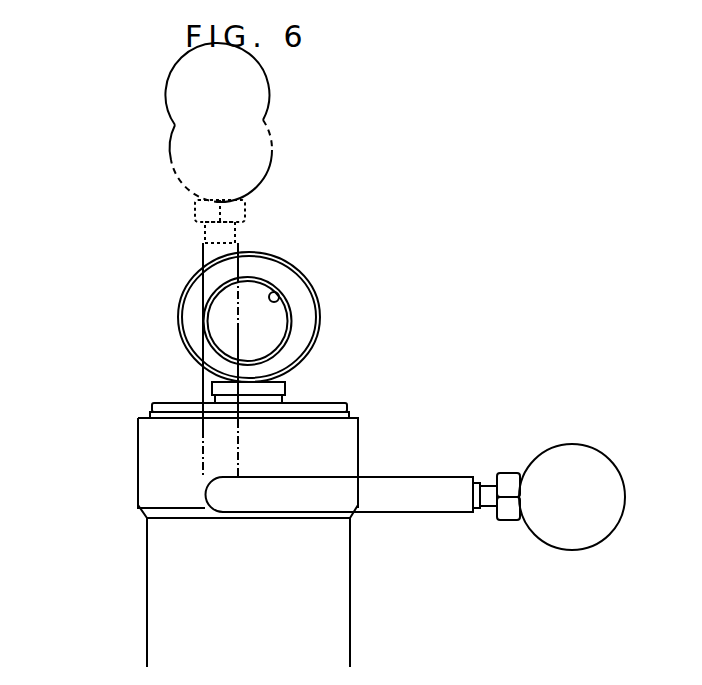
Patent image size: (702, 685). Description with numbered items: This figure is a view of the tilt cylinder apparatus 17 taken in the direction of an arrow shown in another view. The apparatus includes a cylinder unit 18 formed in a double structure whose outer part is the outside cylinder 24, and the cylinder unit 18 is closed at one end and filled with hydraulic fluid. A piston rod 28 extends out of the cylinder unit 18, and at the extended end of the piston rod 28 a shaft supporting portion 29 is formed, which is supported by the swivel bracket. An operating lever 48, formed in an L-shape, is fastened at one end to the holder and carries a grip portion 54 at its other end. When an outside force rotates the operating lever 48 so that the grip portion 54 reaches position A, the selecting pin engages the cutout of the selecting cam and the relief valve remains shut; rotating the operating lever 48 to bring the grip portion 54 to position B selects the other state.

The tilt cylinder apparatus 17 is at (105, 418).
The cylinder unit 18 is at (147, 557).
The outside cylinder 24 is at (158, 623).
The piston rod 28 is at (282, 400).
The shaft supporting portion 29 is at (284, 299).
The operating lever 48 is at (202, 262).
The grip portion 54 is at (275, 152).